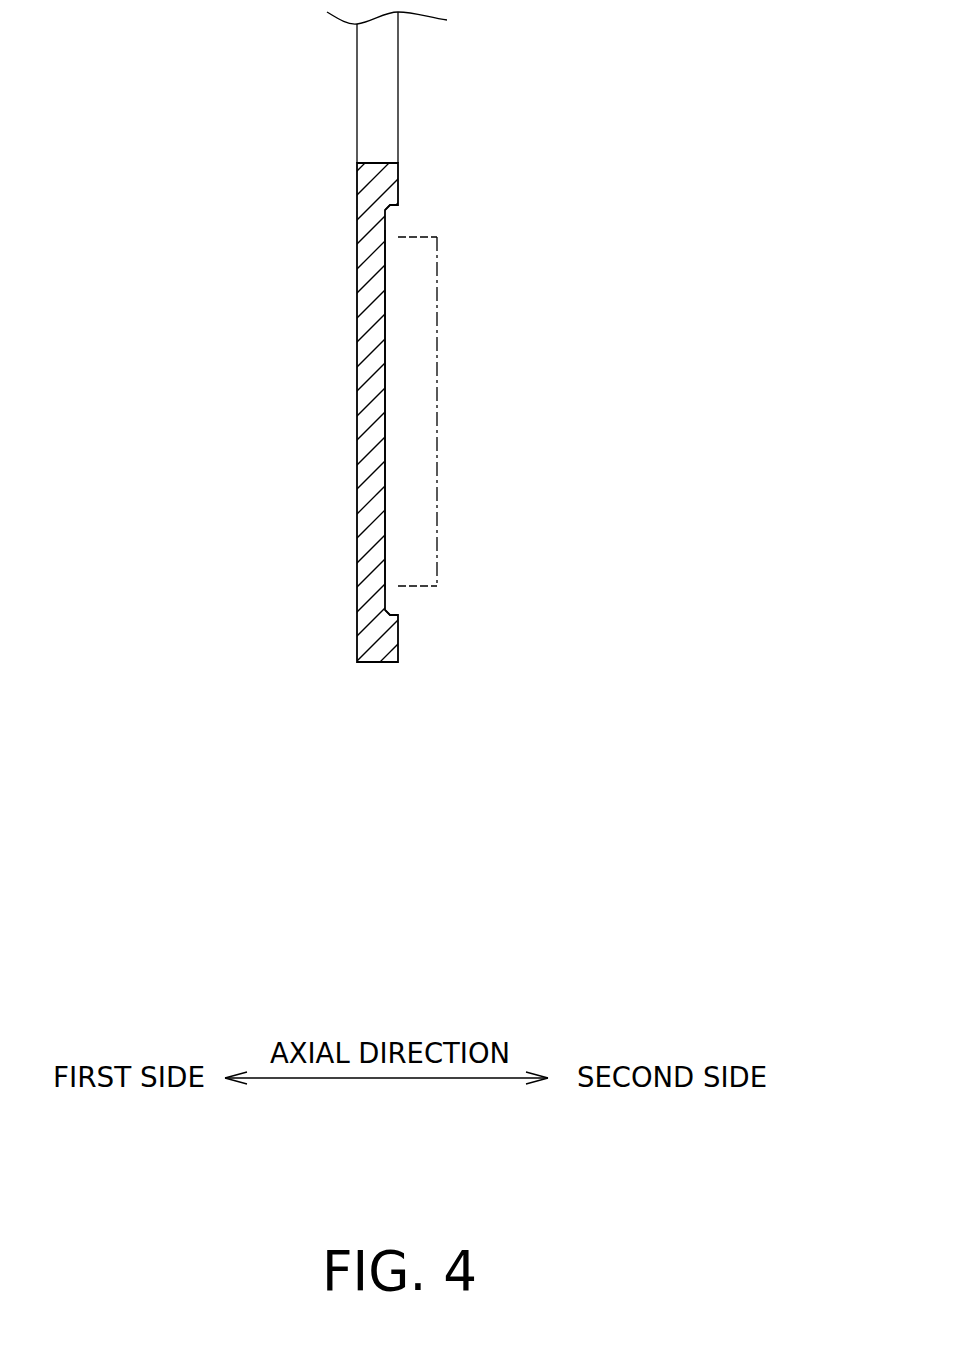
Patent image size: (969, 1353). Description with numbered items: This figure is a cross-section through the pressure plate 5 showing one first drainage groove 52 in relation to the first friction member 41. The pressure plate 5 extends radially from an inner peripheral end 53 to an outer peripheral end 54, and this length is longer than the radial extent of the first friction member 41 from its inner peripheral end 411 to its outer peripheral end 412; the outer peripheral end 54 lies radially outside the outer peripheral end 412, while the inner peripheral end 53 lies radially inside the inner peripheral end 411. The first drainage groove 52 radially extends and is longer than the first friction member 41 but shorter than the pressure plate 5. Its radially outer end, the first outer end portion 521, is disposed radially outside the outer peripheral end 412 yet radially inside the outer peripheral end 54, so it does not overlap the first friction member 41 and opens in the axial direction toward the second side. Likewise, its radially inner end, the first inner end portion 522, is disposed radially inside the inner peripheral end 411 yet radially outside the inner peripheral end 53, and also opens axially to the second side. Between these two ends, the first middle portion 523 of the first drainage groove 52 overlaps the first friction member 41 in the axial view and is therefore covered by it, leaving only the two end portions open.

The pressure plate 5 is at (375, 667).
The inner peripheral end 53 is at (377, 163).
The first inner end portion 522 is at (385, 220).
The first middle portion 523 is at (385, 297).
The first drainage groove 52 is at (385, 453).
The first outer end portion 521 is at (385, 600).
The outer peripheral end 54 is at (392, 663).
The first friction member 41 is at (437, 425).
The inner peripheral end 411 is at (433, 237).
The outer peripheral end 412 is at (437, 586).